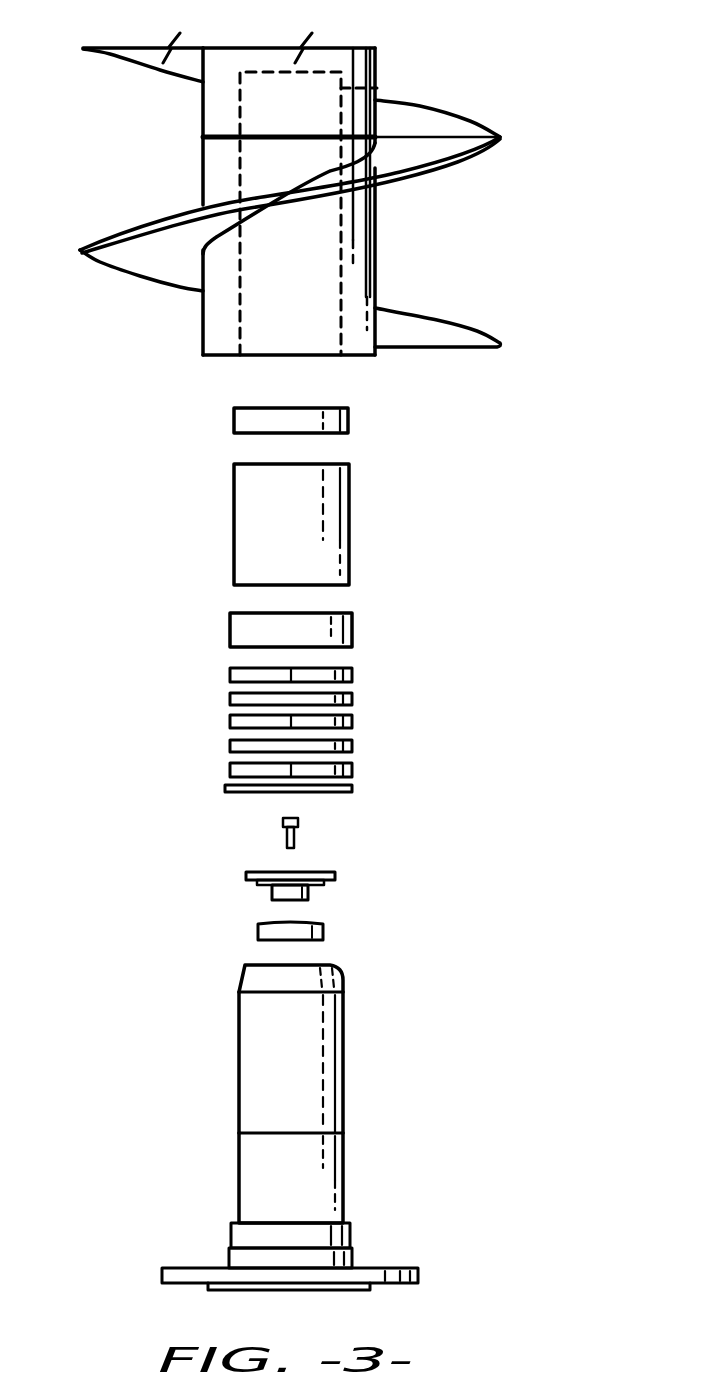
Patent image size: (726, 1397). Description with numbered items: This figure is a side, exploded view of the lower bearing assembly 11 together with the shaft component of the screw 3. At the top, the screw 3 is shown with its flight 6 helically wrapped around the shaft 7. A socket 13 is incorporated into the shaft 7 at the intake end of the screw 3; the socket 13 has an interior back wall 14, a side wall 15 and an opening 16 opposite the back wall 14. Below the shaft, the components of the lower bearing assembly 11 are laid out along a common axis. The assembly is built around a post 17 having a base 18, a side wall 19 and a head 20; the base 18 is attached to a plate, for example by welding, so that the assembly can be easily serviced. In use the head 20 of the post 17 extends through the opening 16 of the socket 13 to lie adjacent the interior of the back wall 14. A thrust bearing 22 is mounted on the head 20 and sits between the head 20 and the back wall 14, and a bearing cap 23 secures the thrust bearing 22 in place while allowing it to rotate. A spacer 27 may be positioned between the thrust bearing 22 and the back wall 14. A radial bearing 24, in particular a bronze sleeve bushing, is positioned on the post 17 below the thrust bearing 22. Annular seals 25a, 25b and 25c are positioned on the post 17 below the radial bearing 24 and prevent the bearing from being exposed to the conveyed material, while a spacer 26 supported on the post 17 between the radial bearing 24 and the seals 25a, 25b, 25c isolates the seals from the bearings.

The screw 3 is at (200, 170).
The flight 6 is at (82, 243).
The shaft 7 is at (203, 336).
The lower bearing assembly 11 is at (220, 1042).
The socket 13 is at (377, 86).
The interior back wall 14 is at (270, 70).
The side wall 15 is at (343, 238).
The opening 16 is at (324, 357).
The post 17 is at (256, 1172).
The base 18 is at (190, 1268).
The side wall 19 is at (343, 1081).
The head 20 is at (343, 981).
The thrust bearing 22 is at (258, 933).
The bearing cap 23 is at (246, 876).
The radial bearing 24 is at (234, 520).
The annular seal 25a is at (230, 675).
The annular seal 25b is at (230, 722).
The annular seal 25c is at (230, 771).
The spacer 26 is at (230, 628).
The spacer 27 is at (234, 427).